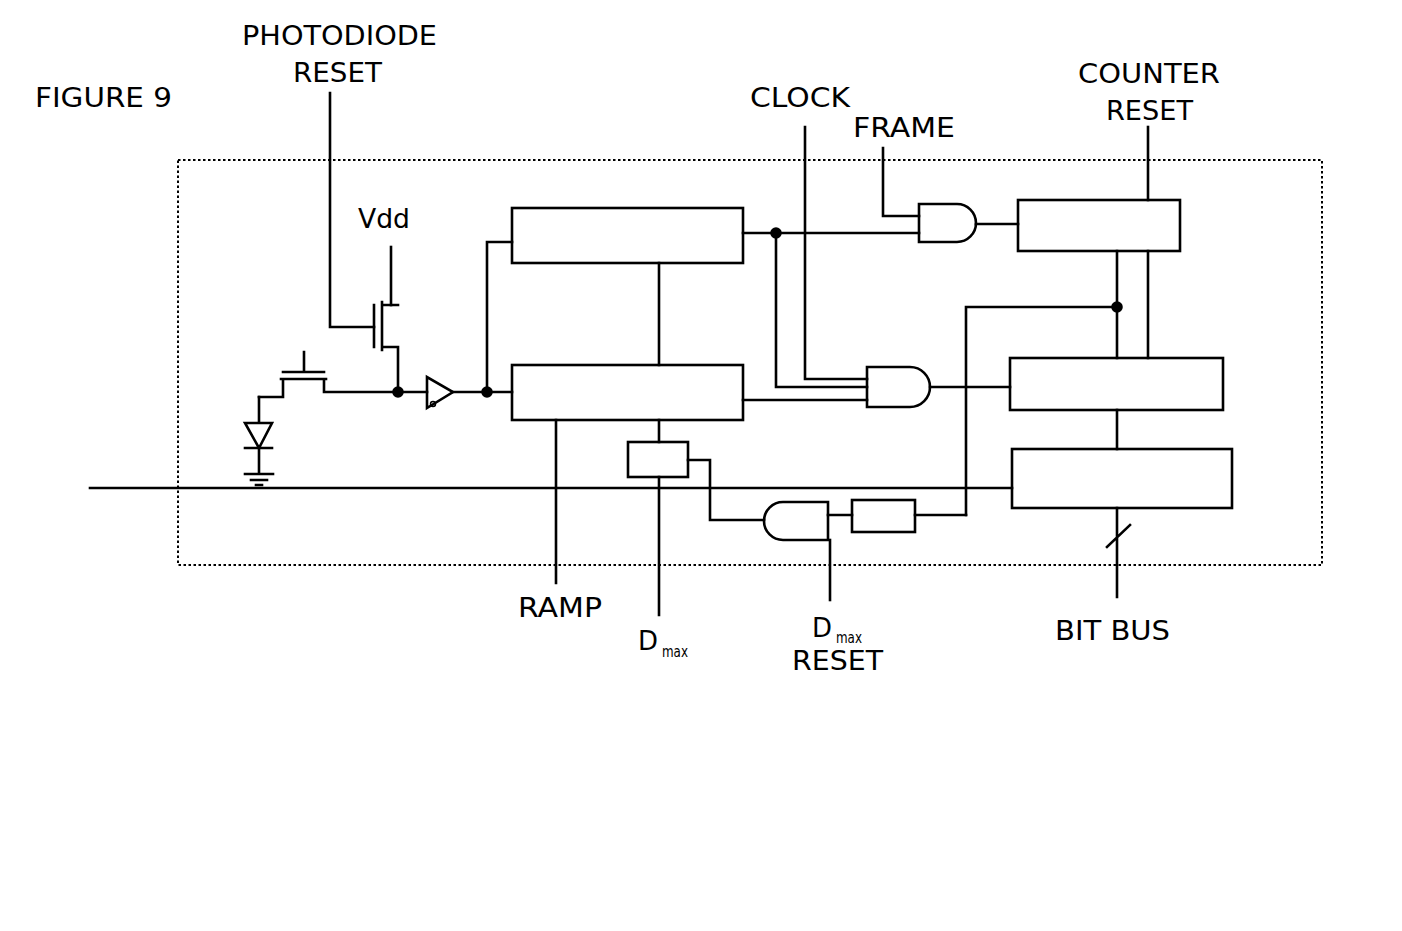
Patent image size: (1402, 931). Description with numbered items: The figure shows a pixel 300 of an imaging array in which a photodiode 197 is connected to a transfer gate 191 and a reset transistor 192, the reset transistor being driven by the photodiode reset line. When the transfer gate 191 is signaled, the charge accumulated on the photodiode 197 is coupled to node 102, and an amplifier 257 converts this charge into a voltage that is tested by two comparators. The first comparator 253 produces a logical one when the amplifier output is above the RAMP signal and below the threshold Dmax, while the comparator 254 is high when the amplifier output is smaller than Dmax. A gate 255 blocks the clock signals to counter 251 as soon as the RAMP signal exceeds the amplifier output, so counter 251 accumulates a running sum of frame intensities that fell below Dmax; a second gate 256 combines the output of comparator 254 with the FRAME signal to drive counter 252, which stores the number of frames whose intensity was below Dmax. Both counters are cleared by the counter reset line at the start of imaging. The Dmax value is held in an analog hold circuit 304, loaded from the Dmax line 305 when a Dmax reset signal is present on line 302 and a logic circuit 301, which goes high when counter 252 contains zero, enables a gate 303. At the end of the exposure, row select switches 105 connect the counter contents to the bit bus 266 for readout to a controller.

The node 102 is at (392, 397).
The row select switches 105 is at (1233, 468).
The transfer gate 191 is at (293, 372).
The reset transistor 192 is at (373, 314).
The photodiode 197 is at (268, 426).
The counter 251 is at (1225, 389).
The counter 252 is at (1178, 238).
The first comparator 253 is at (732, 417).
The comparator 254 is at (723, 257).
The gate 255 is at (907, 405).
The gate 256 is at (958, 237).
The amplifier 257 is at (427, 410).
The bit bus 266 is at (1118, 586).
The pixel 300 is at (1312, 282).
The logic circuit 301 is at (900, 520).
The Dmax reset line 302 is at (837, 582).
The gate 303 is at (780, 530).
The analog hold circuit 304 is at (633, 460).
The Dmax line 305 is at (660, 535).